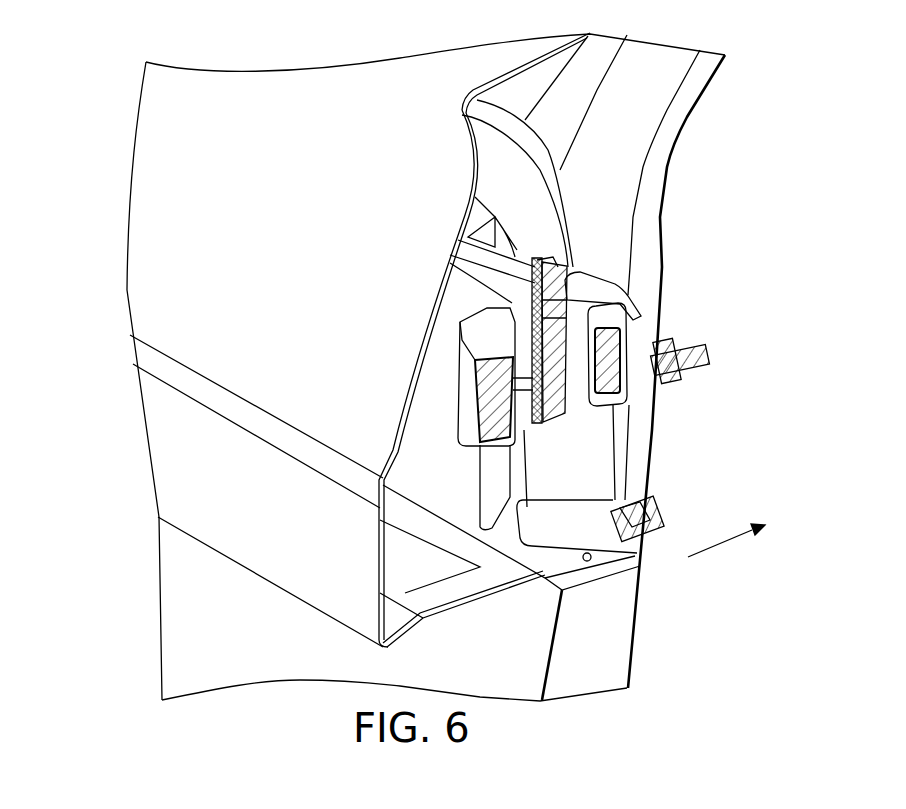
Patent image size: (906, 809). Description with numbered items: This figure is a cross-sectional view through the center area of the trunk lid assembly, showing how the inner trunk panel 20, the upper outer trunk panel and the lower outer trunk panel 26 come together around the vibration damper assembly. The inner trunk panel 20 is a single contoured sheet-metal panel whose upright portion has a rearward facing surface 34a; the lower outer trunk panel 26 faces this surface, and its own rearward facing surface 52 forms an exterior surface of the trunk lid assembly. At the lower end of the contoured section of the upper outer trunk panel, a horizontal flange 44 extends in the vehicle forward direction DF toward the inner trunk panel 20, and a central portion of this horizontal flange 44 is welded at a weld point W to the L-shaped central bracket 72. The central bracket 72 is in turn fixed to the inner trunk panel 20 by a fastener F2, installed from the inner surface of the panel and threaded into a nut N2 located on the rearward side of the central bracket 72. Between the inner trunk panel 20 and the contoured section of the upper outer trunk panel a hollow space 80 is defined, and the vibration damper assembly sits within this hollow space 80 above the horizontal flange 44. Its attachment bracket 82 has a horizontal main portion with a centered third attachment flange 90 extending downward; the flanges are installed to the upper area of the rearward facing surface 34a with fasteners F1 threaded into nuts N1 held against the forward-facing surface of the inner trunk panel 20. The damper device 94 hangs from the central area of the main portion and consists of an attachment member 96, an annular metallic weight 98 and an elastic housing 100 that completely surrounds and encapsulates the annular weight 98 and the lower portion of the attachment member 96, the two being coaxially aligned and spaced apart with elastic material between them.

The inner trunk panel 20 is at (697, 122).
The lower outer trunk panel 26 is at (128, 172).
The rearward facing surface 34a is at (657, 80).
The horizontal flange 44 is at (500, 568).
The rearward facing surface 52 is at (195, 265).
The central bracket 72 is at (565, 555).
The hollow space 80 is at (551, 372).
The attachment bracket 82 is at (593, 278).
The third attachment flange 90 is at (640, 312).
The damper device 94 is at (610, 410).
The attachment member 96 is at (562, 273).
The annular metallic weight 98 is at (498, 410).
The elastic housing 100 is at (468, 397).
The fastener F1 is at (693, 367).
The fastener F2 is at (657, 502).
The nut N1 is at (673, 347).
The nut N2 is at (633, 500).
The weld point W is at (600, 567).
The vehicle forward direction DF is at (722, 545).